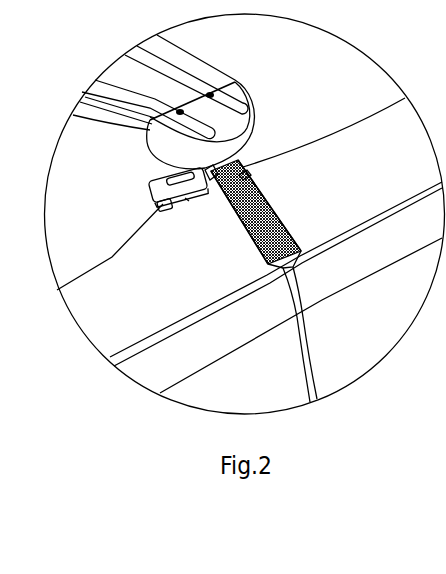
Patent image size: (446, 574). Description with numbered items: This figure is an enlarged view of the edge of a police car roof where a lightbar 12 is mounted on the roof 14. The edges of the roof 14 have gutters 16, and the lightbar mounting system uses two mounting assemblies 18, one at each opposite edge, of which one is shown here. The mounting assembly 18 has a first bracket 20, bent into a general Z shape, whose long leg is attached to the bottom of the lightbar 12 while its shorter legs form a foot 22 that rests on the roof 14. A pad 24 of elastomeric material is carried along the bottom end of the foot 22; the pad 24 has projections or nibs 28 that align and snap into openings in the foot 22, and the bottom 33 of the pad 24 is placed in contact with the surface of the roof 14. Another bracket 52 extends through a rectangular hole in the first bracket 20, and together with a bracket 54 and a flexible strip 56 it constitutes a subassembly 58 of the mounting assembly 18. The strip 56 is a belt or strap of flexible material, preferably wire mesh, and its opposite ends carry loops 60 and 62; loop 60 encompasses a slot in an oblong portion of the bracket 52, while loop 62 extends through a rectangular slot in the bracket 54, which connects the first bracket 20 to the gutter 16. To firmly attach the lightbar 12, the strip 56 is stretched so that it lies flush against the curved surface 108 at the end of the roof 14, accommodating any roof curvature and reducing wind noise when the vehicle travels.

The lightbar 12 is at (196, 68).
The roof 14 is at (348, 86).
The gutters 16 is at (318, 243).
The mounting assemblies 18 is at (150, 186).
The first bracket 20 is at (242, 165).
The foot 22 is at (155, 208).
The pad 24 is at (163, 213).
The projections or nibs 28 is at (158, 180).
The bottom of pad 33 is at (187, 200).
The bracket 52 is at (246, 171).
The bracket 54 is at (270, 272).
The flexible strip 56 is at (262, 208).
The subassembly 58 is at (245, 243).
The loop 60 is at (211, 205).
The loop 62 is at (293, 262).
The curved surface 108 is at (406, 157).